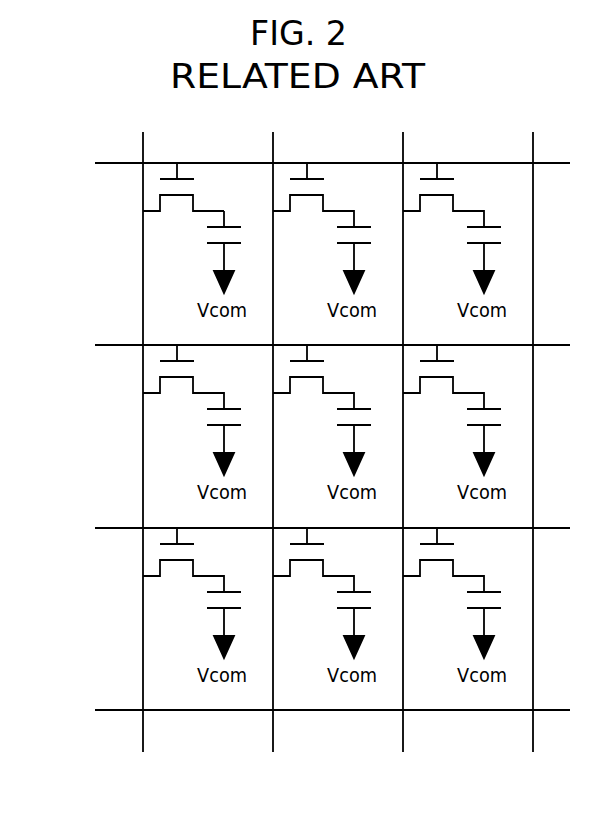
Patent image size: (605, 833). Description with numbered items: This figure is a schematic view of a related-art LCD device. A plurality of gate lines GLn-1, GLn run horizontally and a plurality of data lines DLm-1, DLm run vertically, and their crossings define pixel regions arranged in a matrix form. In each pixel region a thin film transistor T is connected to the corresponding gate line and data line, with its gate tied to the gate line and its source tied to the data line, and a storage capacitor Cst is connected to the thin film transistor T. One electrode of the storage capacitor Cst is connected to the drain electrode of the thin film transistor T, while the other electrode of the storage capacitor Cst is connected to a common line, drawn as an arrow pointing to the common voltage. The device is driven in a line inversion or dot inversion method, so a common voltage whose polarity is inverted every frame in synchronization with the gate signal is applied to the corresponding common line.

The thin film transistor T is at (183, 195).
The storage capacitor Cst is at (240, 252).
The data line DLm-1 is at (152, 427).
The data line DLm is at (273, 427).
The gate line GLn-1 is at (300, 162).
The gate line GLn is at (310, 346).